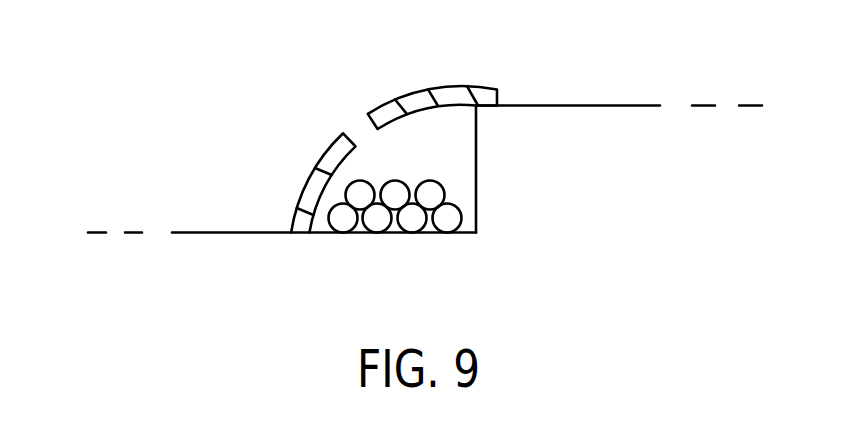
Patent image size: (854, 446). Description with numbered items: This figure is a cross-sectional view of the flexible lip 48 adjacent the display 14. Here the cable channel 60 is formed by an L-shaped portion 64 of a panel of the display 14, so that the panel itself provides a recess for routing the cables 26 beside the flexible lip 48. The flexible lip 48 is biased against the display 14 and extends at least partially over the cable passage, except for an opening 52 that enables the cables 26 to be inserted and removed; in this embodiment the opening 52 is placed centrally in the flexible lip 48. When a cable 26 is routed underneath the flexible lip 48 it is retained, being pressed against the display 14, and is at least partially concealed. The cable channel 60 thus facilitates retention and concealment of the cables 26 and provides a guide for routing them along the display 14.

The display 14 is at (577, 106).
The cables 26 is at (442, 162).
The flexible lip 48 is at (312, 190).
The opening 52 is at (360, 132).
The cable channel 60 is at (340, 252).
The L-shaped portion 64 is at (444, 233).